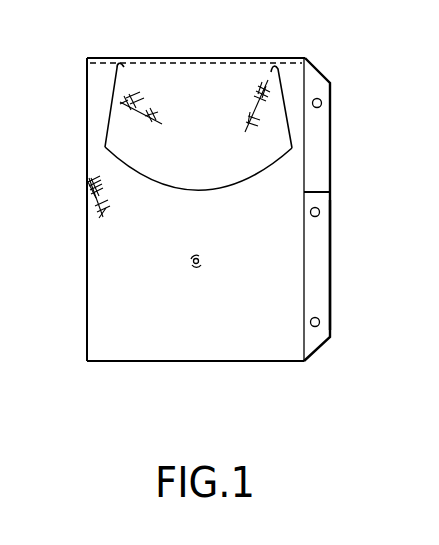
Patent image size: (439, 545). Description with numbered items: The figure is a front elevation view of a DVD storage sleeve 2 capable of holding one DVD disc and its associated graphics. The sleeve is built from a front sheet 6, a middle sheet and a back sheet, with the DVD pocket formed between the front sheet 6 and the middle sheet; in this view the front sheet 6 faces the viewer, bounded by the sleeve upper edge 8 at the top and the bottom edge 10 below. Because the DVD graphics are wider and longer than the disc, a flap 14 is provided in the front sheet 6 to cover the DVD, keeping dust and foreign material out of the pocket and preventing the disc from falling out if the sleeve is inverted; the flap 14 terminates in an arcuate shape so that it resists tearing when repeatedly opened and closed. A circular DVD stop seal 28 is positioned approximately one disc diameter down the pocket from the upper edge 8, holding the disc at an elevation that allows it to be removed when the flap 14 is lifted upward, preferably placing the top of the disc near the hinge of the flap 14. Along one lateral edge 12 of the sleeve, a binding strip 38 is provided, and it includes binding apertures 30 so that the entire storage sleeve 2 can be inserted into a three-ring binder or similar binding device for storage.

The DVD storage sleeve 2 is at (330, 54).
The front sheet 6 is at (93, 258).
The upper edge 8 is at (147, 58).
The bottom edge 10 is at (122, 362).
The lateral edge 12 is at (330, 192).
The flap 14 is at (283, 137).
The DVD stop seal 28 is at (199, 266).
The binding aperture 30 is at (322, 102).
The binding strip 38 is at (316, 262).